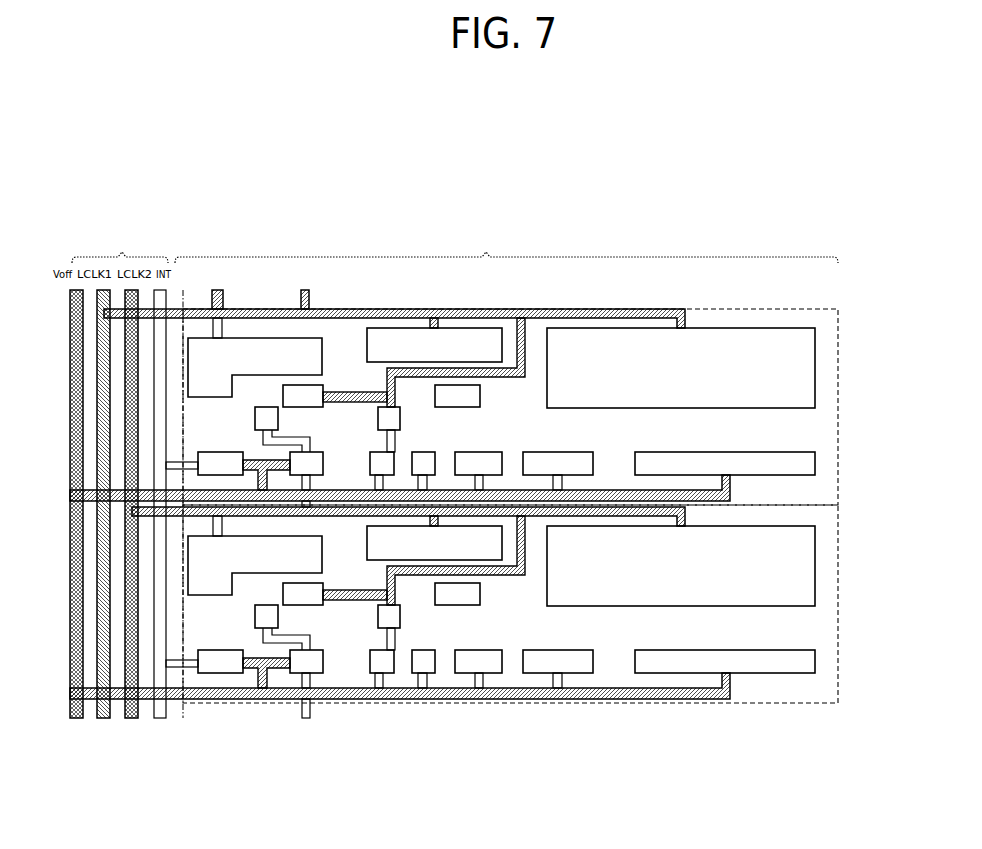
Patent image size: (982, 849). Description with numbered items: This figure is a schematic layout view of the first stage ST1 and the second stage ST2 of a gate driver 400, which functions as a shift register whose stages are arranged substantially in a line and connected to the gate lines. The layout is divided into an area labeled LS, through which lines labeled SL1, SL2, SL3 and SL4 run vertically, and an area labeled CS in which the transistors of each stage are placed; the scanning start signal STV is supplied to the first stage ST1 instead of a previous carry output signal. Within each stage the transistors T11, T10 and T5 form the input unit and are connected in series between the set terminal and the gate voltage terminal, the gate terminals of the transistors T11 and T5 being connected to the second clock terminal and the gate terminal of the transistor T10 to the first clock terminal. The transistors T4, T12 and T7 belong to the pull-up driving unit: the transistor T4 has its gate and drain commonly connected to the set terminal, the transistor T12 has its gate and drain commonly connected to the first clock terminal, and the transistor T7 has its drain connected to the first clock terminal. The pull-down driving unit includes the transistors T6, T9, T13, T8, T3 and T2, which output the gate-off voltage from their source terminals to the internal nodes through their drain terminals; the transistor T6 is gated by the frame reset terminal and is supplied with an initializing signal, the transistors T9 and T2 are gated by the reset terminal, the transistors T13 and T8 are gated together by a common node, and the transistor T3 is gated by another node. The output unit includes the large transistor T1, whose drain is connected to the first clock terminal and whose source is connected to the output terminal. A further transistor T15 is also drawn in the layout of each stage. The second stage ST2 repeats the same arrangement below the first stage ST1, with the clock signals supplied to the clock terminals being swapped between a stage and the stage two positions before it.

The gate driver 400 is at (462, 189).
The line part (signal lines region) LS is at (120, 245).
The circuit part (stage circuits region) CS is at (506, 245).
The first signal line (Voff) SL1 is at (70, 347).
The second signal line (LCLK1) SL2 is at (97, 401).
The third signal line (LCLK2) SL3 is at (125, 444).
The fourth signal line (INT) SL4 is at (154, 479).
The scanning start signal STV is at (219, 398).
The first stage ST1 is at (838, 402).
The second stage ST2 is at (838, 600).
The transistor T1 is at (729, 328).
The transistor T2 is at (728, 452).
The transistor T3 is at (562, 452).
The transistor T4 is at (258, 338).
The transistor T5 is at (323, 459).
The transistor T6 is at (214, 452).
The transistor T7 is at (480, 398).
The transistor T8 is at (427, 452).
The transistor T9 is at (482, 452).
The transistor T10 is at (283, 396).
The transistor T11 is at (255, 419).
The transistor T12 is at (378, 419).
The transistor T13 is at (390, 452).
The fifteenth transistor T15 is at (367, 340).